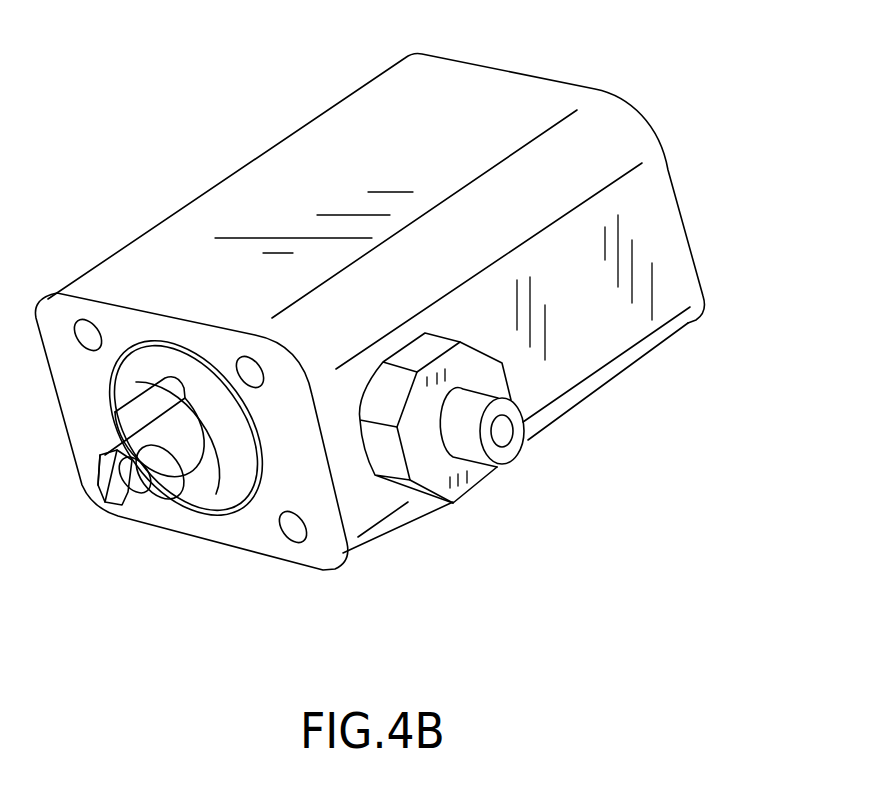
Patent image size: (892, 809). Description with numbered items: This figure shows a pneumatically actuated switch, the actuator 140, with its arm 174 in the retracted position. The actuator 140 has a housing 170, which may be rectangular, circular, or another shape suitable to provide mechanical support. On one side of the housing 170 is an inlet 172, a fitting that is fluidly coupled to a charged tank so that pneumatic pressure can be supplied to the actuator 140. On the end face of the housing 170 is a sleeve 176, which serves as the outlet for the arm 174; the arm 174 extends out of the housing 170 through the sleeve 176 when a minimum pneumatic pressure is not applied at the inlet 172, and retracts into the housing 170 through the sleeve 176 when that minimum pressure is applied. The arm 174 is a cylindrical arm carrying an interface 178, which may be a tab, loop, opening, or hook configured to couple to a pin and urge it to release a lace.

The actuator 140 is at (513, 90).
The housing 170 is at (585, 315).
The inlet 172 is at (481, 444).
The arm 174 is at (188, 470).
The sleeve 176 is at (188, 410).
The interface 178 is at (145, 483).